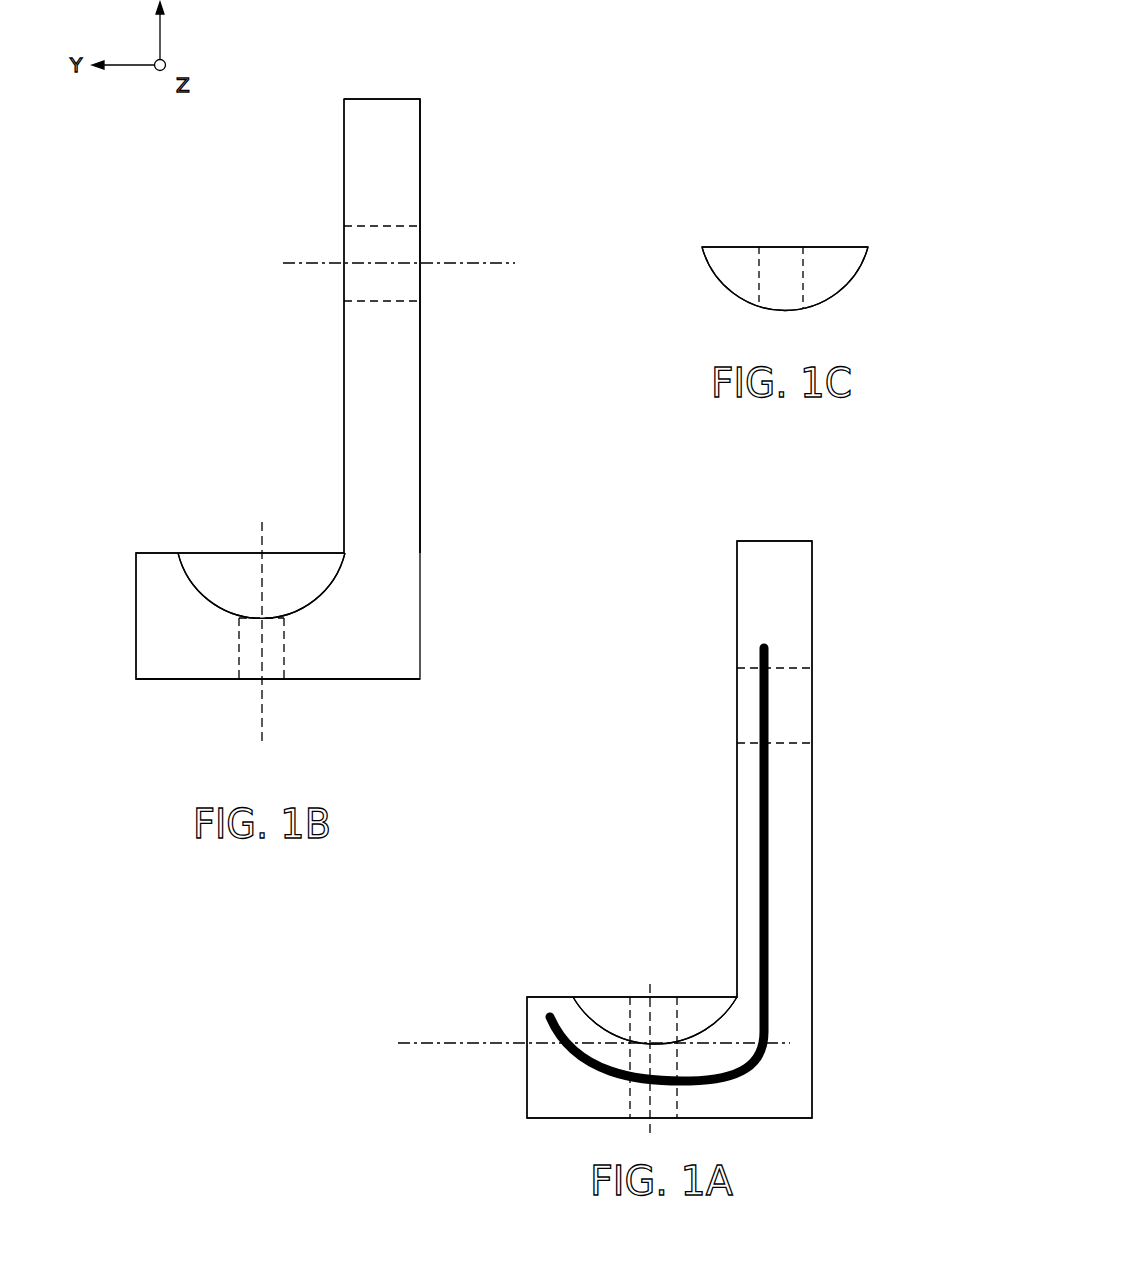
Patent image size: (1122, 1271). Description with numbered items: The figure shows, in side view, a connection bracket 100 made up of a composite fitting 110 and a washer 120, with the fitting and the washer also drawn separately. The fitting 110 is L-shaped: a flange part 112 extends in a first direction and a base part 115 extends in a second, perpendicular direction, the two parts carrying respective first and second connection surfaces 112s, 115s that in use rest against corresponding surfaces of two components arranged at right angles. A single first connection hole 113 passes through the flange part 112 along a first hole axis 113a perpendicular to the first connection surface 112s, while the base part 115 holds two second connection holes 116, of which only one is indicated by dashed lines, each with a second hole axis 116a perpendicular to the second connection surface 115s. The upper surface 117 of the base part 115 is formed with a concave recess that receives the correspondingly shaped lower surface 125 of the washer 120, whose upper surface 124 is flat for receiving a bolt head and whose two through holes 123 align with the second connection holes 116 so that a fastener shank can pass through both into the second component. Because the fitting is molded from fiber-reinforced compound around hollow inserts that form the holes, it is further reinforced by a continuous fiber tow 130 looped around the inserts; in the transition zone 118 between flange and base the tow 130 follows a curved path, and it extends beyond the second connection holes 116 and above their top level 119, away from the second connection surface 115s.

In FIG. 1A, the connection bracket 100 is at (672, 855).
In FIG. 1B, the composite fitting 110 is at (267, 405).
In FIG. 1A, the composite fitting 110 is at (780, 608).
In FIG. 1B, the flange part 112 is at (259, 194).
In FIG. 1B, the first connection surface 112s is at (440, 190).
In FIG. 1B, the first connection hole 113 is at (395, 283).
In FIG. 1B, the first hole axis 113a is at (497, 276).
In FIG. 1B, the base part 115 is at (106, 628).
In FIG. 1B, the second connection surface 115s is at (351, 694).
In FIG. 1B, the second connection hole 116 is at (253, 654).
In FIG. 1B, the second hole axis 116a is at (258, 725).
In FIG. 1A, the second hole axis 116a is at (643, 1103).
In FIG. 1B, the upper surface of the base part 117 is at (201, 578).
In FIG. 1B, the transition zone 118 is at (342, 595).
In FIG. 1A, the transition zone 118 is at (738, 1030).
In FIG. 1A, the top level of the second connection holes 119 is at (453, 1043).
In FIG. 1C, the washer 120 is at (935, 277).
In FIG. 1A, the washer 120 is at (608, 1013).
In FIG. 1C, the through hole 123 is at (777, 280).
In FIG. 1C, the upper surface of the washer 124 is at (850, 224).
In FIG. 1C, the lower surface of the washer 125 is at (712, 308).
In FIG. 1A, the continuous fiber tow 130 is at (770, 957).